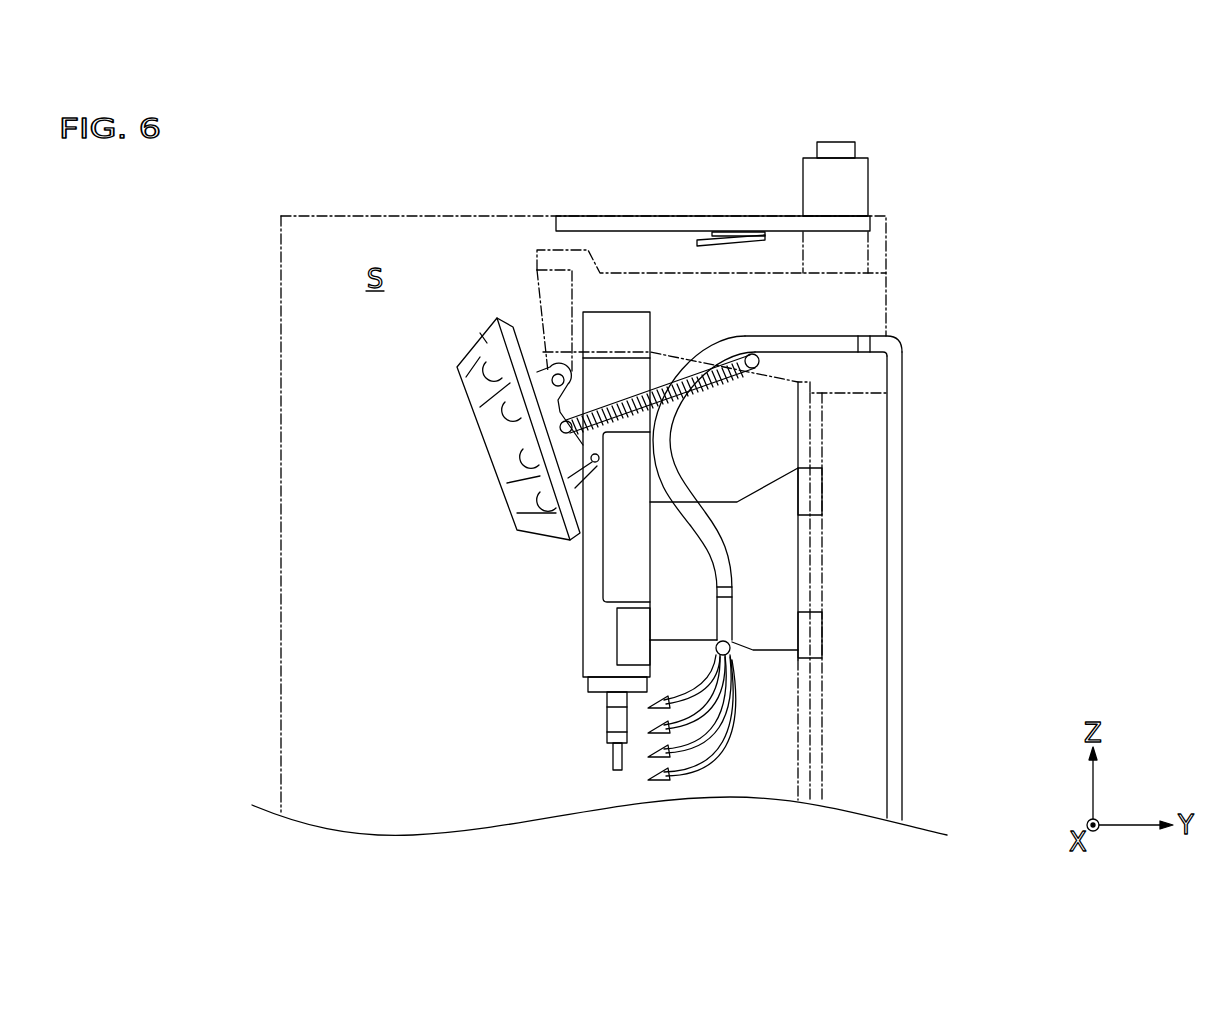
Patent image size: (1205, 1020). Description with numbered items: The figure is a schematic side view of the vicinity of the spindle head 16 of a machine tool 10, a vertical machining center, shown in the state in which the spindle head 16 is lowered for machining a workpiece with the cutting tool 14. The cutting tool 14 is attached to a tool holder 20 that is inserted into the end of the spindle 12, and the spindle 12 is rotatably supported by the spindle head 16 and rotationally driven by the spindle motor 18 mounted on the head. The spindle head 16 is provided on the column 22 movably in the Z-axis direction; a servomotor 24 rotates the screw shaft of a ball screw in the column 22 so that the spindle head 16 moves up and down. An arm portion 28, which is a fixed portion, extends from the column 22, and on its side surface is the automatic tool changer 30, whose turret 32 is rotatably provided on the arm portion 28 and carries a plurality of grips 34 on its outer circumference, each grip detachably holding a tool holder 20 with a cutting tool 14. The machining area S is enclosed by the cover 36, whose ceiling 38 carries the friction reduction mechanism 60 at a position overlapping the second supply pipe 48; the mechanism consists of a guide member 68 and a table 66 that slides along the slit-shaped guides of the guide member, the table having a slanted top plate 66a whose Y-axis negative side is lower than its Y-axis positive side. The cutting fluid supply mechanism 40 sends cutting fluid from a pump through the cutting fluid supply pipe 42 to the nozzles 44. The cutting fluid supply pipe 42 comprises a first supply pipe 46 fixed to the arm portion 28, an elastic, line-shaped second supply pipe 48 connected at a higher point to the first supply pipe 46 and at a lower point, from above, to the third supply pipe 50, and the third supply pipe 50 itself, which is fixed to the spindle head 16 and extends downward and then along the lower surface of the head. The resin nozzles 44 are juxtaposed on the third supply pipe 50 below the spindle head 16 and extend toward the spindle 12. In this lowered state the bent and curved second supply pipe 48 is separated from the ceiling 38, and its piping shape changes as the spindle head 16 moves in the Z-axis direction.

The machine tool 10 is at (910, 157).
The spindle 12 is at (588, 684).
The cutting tool 14 is at (613, 758).
The spindle head 16 is at (583, 572).
The spindle motor 18 is at (612, 325).
The tool holder 20 is at (613, 720).
The column 22 is at (857, 573).
The servomotor 24 is at (833, 150).
The arm portion 28 is at (643, 273).
The automatic tool changer 30 is at (441, 388).
The turret 32 is at (497, 427).
The grips 34 is at (530, 456).
The cover 36 is at (280, 298).
The ceiling 38 is at (533, 488).
The cutting fluid supply mechanism 40 is at (1003, 581).
The cutting fluid supply pipe 42 is at (917, 408).
The nozzles 44 is at (727, 728).
The first supply pipe 46 is at (893, 507).
The second supply pipe 48 is at (668, 492).
The third supply pipe 50 is at (725, 617).
The friction reduction mechanism 60 is at (705, 215).
The table 66 is at (707, 248).
The top plate 66a is at (735, 247).
The guide member 68 is at (594, 223).